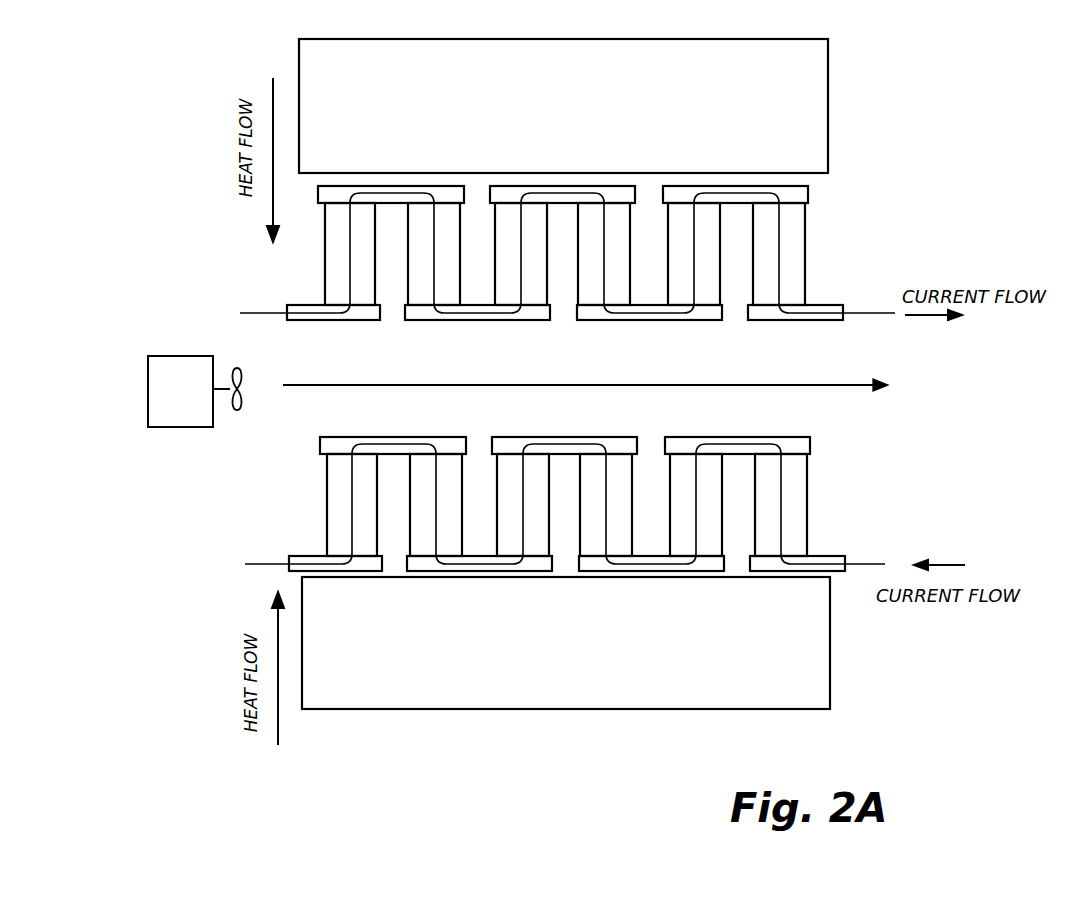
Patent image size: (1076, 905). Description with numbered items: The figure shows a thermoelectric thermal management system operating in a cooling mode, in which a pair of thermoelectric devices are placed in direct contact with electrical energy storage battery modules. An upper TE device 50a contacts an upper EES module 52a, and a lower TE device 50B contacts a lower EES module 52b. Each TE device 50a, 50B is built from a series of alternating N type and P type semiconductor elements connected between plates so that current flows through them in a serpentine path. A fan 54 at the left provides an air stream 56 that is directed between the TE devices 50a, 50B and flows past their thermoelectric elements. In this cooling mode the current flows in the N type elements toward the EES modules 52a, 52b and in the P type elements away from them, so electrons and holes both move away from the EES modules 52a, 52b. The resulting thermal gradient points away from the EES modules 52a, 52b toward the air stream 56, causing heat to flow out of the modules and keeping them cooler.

The EES module 52a is at (829, 125).
The TE device 50a is at (862, 256).
The fan 54 is at (207, 452).
The air stream 56 is at (792, 383).
The TE device 50B is at (852, 522).
The EES module 52b is at (831, 643).